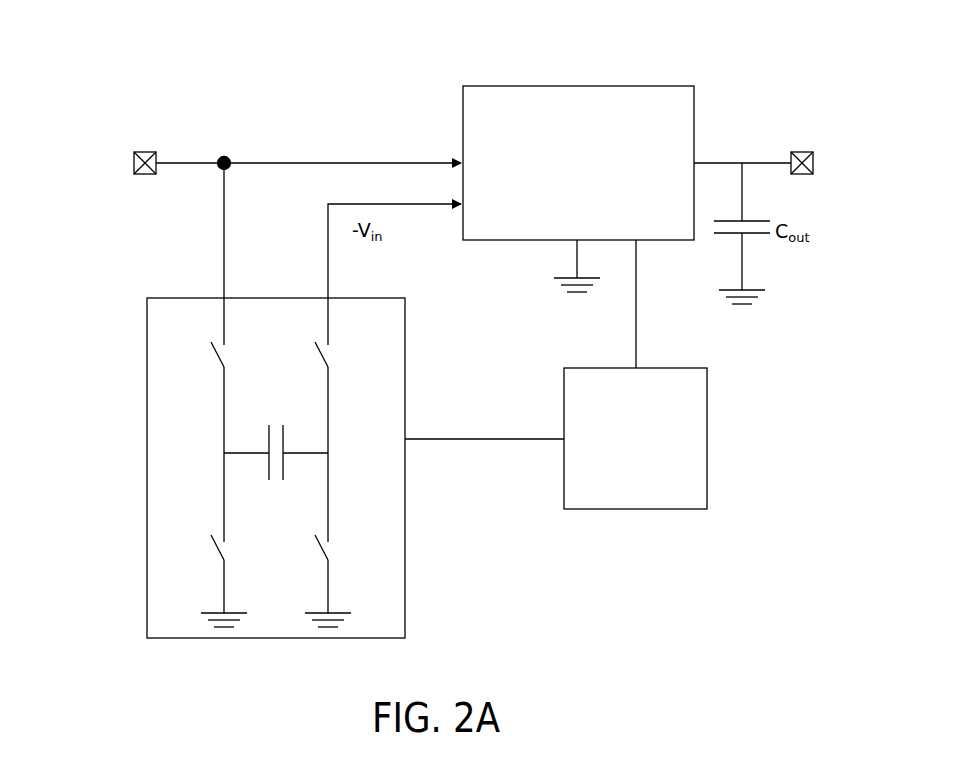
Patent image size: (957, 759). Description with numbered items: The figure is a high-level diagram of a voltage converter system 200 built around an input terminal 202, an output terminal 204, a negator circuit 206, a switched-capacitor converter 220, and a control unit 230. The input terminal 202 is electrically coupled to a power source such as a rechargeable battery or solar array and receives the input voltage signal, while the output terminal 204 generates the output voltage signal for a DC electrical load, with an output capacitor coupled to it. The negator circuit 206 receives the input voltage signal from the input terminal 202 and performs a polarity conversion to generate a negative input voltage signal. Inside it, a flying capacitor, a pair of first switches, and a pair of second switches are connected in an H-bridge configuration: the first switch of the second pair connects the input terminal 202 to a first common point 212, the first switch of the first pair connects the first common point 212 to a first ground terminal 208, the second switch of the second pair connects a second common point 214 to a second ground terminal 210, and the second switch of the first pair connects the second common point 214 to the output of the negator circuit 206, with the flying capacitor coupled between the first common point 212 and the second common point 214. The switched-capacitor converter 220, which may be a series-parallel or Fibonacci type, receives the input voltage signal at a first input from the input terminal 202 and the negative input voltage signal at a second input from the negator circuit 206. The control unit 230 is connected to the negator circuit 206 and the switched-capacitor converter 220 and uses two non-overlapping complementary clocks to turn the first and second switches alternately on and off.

The voltage converter system 200 is at (110, 46).
The input terminal 202 is at (134, 163).
The output terminal 204 is at (813, 163).
The negator circuit 206 is at (313, 434).
The first ground terminal 208 is at (223, 632).
The second ground terminal 210 is at (328, 632).
The first common point 212 is at (224, 453).
The second common point 214 is at (328, 453).
The switched-capacitor converter 220 is at (463, 125).
The control unit 230 is at (623, 450).